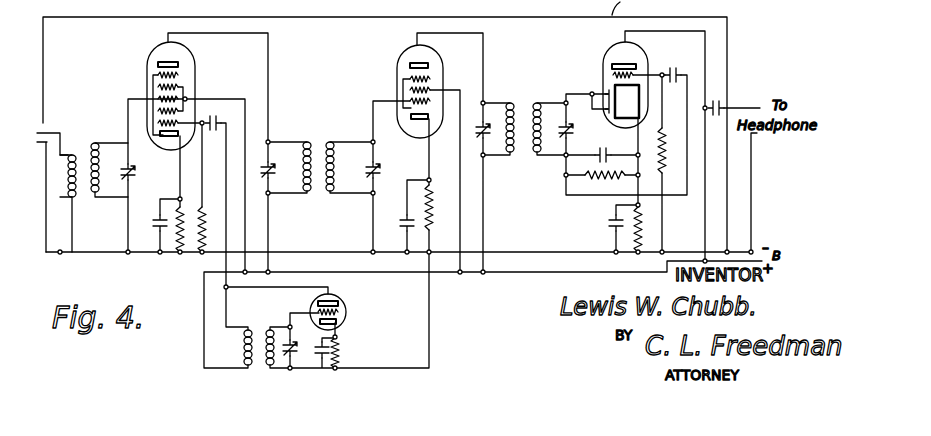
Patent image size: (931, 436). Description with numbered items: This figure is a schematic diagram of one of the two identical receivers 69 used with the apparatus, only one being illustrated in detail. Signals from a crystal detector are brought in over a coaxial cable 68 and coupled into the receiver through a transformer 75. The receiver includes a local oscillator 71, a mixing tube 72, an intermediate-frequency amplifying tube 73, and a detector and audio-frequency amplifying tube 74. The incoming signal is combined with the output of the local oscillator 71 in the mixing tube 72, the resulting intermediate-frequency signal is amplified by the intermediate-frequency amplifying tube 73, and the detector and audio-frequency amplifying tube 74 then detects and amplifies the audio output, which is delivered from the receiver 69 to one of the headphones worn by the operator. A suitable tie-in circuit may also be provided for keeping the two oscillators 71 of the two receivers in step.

The coaxial cable 68 is at (43, 124).
The receiver 69 is at (135, 15).
The local oscillator 71 is at (372, 348).
The mixing tube 72 is at (196, 87).
The intermediate-frequency amplifying tube 73 is at (396, 77).
The detector and audio-frequency amplifying tube 74 is at (603, 76).
The transformer 75 is at (82, 158).